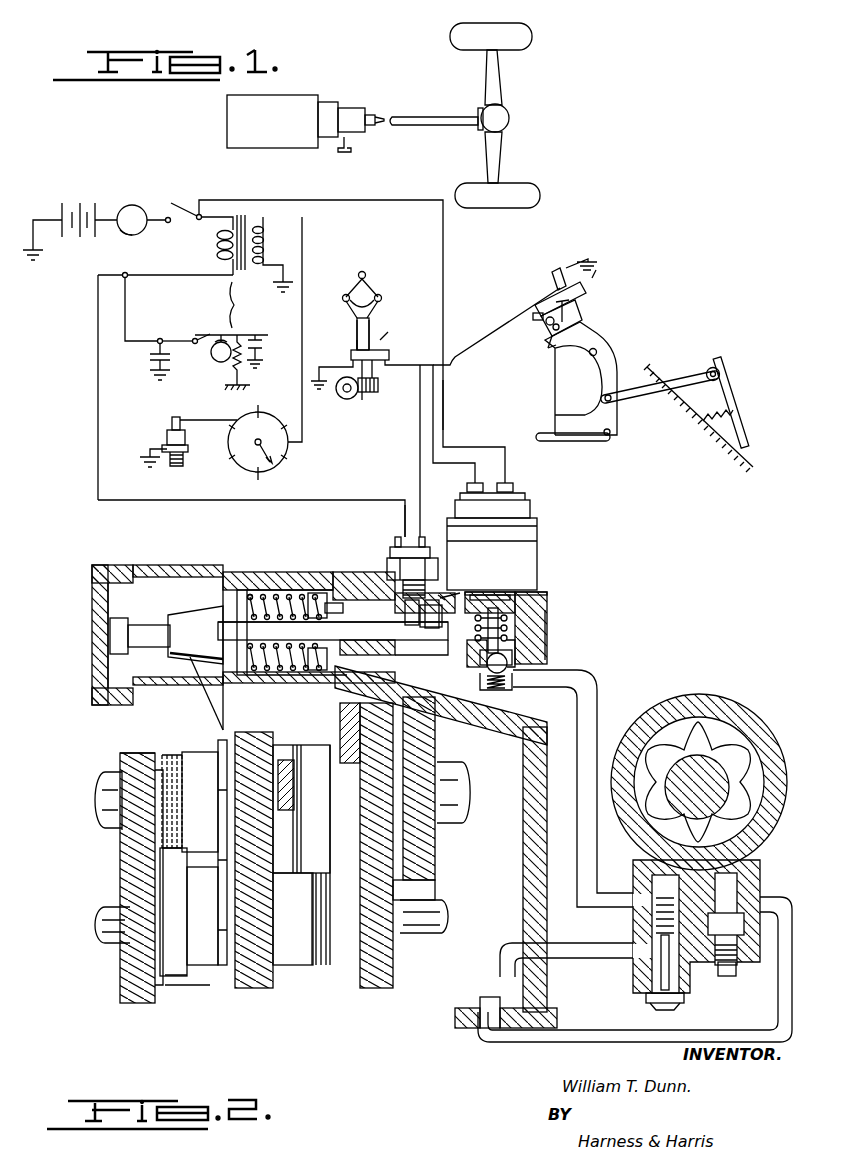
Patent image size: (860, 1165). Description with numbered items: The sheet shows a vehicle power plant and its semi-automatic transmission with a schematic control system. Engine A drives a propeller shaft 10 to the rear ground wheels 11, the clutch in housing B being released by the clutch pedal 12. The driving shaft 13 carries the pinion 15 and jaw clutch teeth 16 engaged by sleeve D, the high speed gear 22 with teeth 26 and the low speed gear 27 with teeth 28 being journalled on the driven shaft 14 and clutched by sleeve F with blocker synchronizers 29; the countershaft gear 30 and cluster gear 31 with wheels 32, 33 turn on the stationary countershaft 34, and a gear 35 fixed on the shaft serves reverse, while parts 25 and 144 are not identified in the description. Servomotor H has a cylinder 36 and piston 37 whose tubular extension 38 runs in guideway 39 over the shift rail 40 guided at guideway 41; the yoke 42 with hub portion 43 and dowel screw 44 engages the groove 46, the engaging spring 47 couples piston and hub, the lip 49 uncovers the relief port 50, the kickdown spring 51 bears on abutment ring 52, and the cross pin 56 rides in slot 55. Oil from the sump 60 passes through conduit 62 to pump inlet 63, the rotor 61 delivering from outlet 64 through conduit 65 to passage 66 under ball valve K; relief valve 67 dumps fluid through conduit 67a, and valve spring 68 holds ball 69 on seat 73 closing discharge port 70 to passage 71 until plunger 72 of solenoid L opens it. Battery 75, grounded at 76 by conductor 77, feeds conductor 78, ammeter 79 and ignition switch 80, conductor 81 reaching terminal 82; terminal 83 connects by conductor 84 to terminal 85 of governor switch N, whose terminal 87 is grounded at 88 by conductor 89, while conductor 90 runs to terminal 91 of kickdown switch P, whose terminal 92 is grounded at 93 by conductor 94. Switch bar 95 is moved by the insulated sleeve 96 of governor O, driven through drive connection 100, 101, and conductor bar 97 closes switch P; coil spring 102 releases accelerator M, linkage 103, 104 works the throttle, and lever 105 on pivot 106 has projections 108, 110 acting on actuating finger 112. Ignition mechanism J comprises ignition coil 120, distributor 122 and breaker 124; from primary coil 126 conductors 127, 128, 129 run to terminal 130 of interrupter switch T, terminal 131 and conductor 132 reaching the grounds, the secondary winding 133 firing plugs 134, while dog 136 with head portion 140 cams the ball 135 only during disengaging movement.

In FIG. 1, the propeller shaft 10 is at (460, 117).
In FIG. 1, the rear ground wheels 11 is at (520, 36).
In FIG. 1, the clutch pedal 12 is at (352, 151).
In FIG. 1, the storage battery 75 is at (66, 210).
In FIG. 1, the ground 76 is at (45, 262).
In FIG. 1, the conductor 77 is at (42, 220).
In FIG. 1, the conductor 78 is at (106, 215).
In FIG. 1, the ammeter 79 is at (121, 232).
In FIG. 1, the ignition switch 80 is at (185, 205).
In FIG. 1, the conductor 81 is at (298, 200).
In FIG. 1, the solenoid terminal 82 is at (505, 480).
In FIG. 1, the solenoid terminal 83 is at (478, 480).
In FIG. 1, the conductor 84 is at (446, 405).
In FIG. 1, the governor switch terminal 85 is at (390, 353).
In FIG. 1, the governor switch terminal 87 is at (358, 346).
In FIG. 1, the ground 88 is at (343, 400).
In FIG. 1, the conductor 89 is at (346, 366).
In FIG. 1, the conductor 90 is at (500, 327).
In FIG. 1, the kickdown switch terminal 91 is at (548, 290).
In FIG. 1, the kickdown switch terminal 92 is at (562, 270).
In FIG. 1, the ground 93 is at (604, 270).
In FIG. 1, the conductor 94 is at (588, 256).
In FIG. 1, the movable conductor switch bar 95 is at (378, 332).
In FIG. 1, the insulated sliding sleeve 96 is at (357, 325).
In FIG. 1, the conductor bar 97 is at (545, 321).
In FIG. 1, the drive connection 100 is at (380, 394).
In FIG. 1, the governor driving means 101 is at (375, 412).
In FIG. 2, the governor driving means 101 is at (330, 966).
In FIG. 1, the coil spring 102 is at (715, 438).
In FIG. 1, the linkage 103 is at (685, 375).
In FIG. 1, the linkage 104 is at (565, 436).
In FIG. 1, the lever 105 is at (597, 375).
In FIG. 1, the pivot 106 is at (597, 352).
In FIG. 1, the projection 108 is at (552, 350).
In FIG. 1, the projection 110 is at (572, 316).
In FIG. 1, the actuating finger 112 is at (553, 336).
In FIG. 1, the ignition coil 120 is at (238, 215).
In FIG. 1, the distributor 122 is at (278, 468).
In FIG. 1, the breaker 124 is at (203, 334).
In FIG. 1, the primary coil 126 is at (216, 243).
In FIG. 1, the conductor 127 is at (139, 268).
In FIG. 1, the conductor 128 is at (98, 386).
In FIG. 1, the conductor 129 is at (200, 500).
In FIG. 1, the interrupter switch terminal 130 is at (400, 534).
In FIG. 1, the interrupter switch terminal 131 is at (421, 528).
In FIG. 1, the conductor 132 is at (428, 451).
In FIG. 1, the secondary winding 133 is at (265, 240).
In FIG. 1, the spark plugs 134 is at (165, 440).
In FIG. 2, the driving shaft 13 is at (100, 793).
In FIG. 2, the driven shaft 14 is at (462, 772).
In FIG. 2, the main driving gear 15 is at (118, 758).
In FIG. 2, the jaw clutch teeth 16 is at (157, 755).
In FIG. 2, the high speed gear 22 is at (248, 740).
In FIG. 2, the gear 25 is at (393, 720).
In FIG. 2, the jaw clutch teeth 26 is at (285, 786).
In FIG. 2, the low speed gear 27 is at (414, 929).
In FIG. 2, the jaw clutch teeth 28 is at (355, 715).
In FIG. 2, the blocker synchronizers 29 is at (340, 746).
In FIG. 2, the countershaft gear 30 is at (125, 990).
In FIG. 2, the cluster gear 31 is at (320, 968).
In FIG. 2, the cluster gear wheel 32 is at (258, 990).
In FIG. 2, the cluster gear wheel 33 is at (395, 950).
In FIG. 2, the countershaft 34 is at (100, 960).
In FIG. 2, the reverse gear 35 is at (430, 729).
In FIG. 2, the cylinder 36 is at (262, 672).
In FIG. 2, the piston 37 is at (303, 590).
In FIG. 2, the tubular extension 38 is at (393, 598).
In FIG. 2, the guideway 39 is at (360, 629).
In FIG. 2, the shift rail 40 is at (297, 640).
In FIG. 2, the guideway 41 is at (143, 618).
In FIG. 2, the yoke 42 is at (206, 675).
In FIG. 2, the hub portion 43 is at (162, 630).
In FIG. 2, the dowel screw 44 is at (213, 611).
In FIG. 2, the groove 46 is at (226, 745).
In FIG. 2, the engaging spring 47 is at (333, 631).
In FIG. 2, the lip 49 is at (323, 672).
In FIG. 2, the relief port 50 is at (283, 672).
In FIG. 2, the kickdown spring 51 is at (316, 617).
In FIG. 2, the abutment ring 52 is at (258, 590).
In FIG. 2, the slot 55 is at (432, 600).
In FIG. 2, the cross pin 56 is at (418, 662).
In FIG. 2, the supply source 60 is at (472, 968).
In FIG. 2, the rotor 61 is at (728, 733).
In FIG. 2, the conduit 62 is at (740, 1032).
In FIG. 2, the pump inlet 63 is at (745, 882).
In FIG. 2, the pump outlet 64 is at (650, 878).
In FIG. 2, the conduit 65 is at (578, 874).
In FIG. 2, the passage 66 is at (476, 697).
In FIG. 2, the relief valve 67 is at (650, 968).
In FIG. 2, the conduit 67a is at (596, 933).
In FIG. 2, the valve spring 68 is at (540, 703).
In FIG. 2, the ball 69 is at (540, 670).
In FIG. 2, the discharge port 70 is at (545, 646).
In FIG. 2, the passage 71 is at (483, 625).
In FIG. 2, the plunger 72 is at (535, 612).
In FIG. 2, the seat 73 is at (545, 626).
In FIG. 2, the operating element 135 is at (438, 595).
In FIG. 2, the switch actuator dog 136 is at (492, 599).
In FIG. 2, the head portion 140 is at (446, 608).
In FIG. 2, the valve seat 144 is at (486, 641).